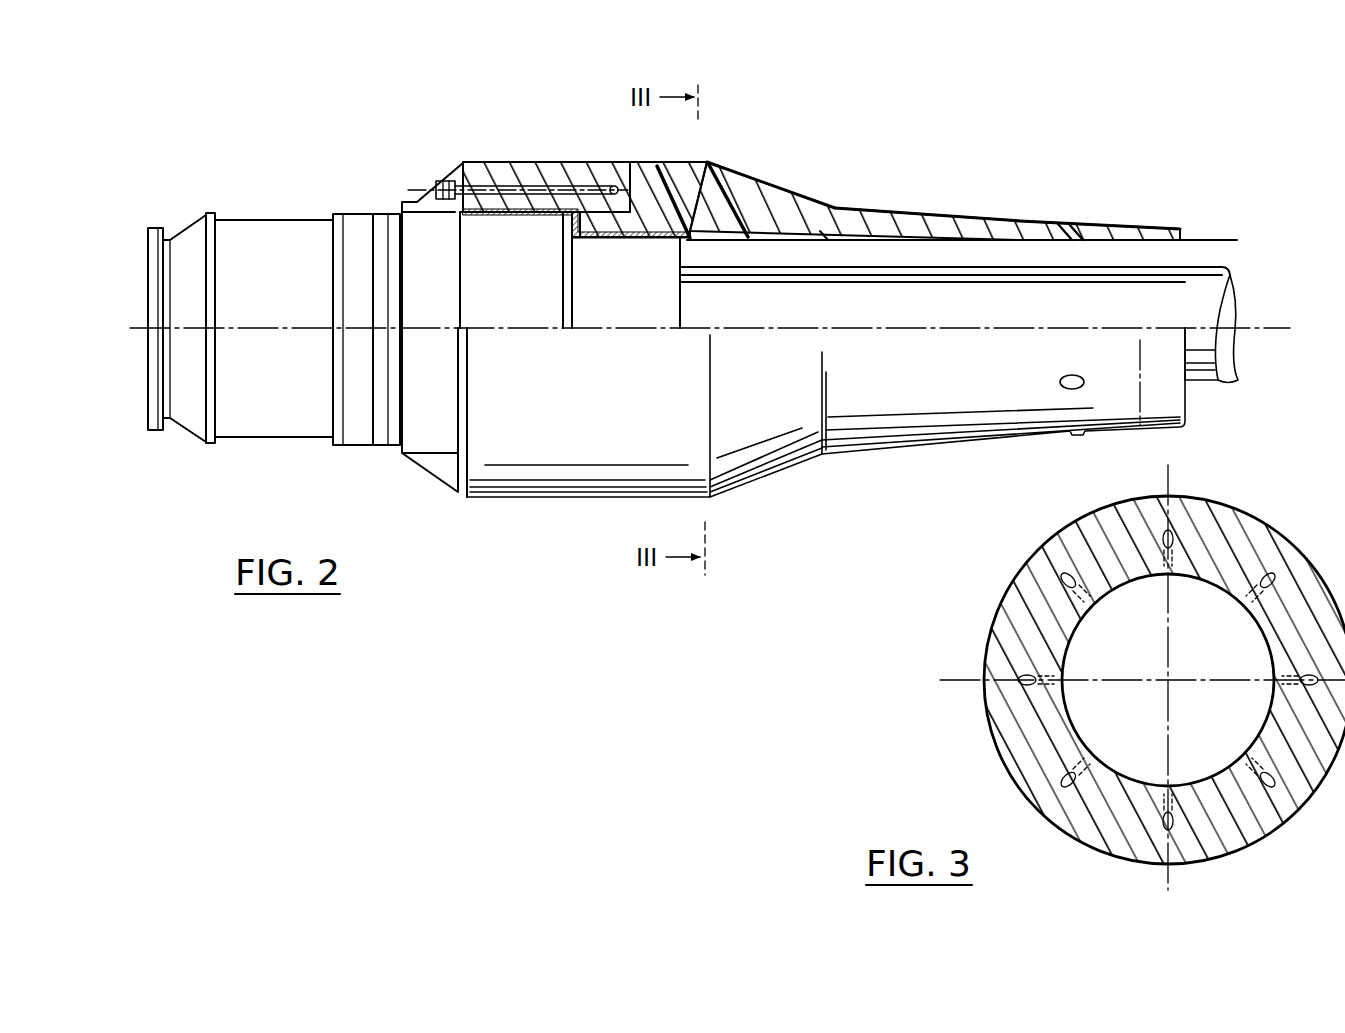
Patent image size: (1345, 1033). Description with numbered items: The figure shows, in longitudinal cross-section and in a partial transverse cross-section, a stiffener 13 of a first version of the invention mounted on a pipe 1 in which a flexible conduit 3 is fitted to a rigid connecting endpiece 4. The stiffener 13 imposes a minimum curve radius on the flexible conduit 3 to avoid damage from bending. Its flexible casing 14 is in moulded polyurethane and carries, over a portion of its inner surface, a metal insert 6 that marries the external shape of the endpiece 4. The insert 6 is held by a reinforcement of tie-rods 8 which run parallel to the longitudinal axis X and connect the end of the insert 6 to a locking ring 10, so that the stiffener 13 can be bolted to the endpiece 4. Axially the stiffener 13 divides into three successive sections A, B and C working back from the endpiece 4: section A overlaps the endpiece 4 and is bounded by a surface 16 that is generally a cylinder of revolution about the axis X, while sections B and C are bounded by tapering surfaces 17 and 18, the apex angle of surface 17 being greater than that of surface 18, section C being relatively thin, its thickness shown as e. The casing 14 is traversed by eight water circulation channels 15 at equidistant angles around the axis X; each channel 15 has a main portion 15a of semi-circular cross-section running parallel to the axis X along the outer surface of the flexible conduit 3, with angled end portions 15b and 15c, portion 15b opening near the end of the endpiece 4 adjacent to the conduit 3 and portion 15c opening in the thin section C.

In FIG. 2, the pipe 1 is at (320, 250).
In FIG. 2, the flexible conduit 3 is at (862, 273).
In FIG. 2, the rigid connecting endpiece 4 is at (285, 405).
In FIG. 2, the metal insert 6 is at (507, 215).
In FIG. 2, the tie-rods 8 is at (577, 177).
In FIG. 2, the locking ring 10 is at (614, 233).
In FIG. 2, the stiffener 13 is at (935, 167).
In FIG. 3, the stiffener 13 is at (1022, 606).
In FIG. 2, the flexible casing 14 is at (512, 173).
In FIG. 3, the flexible casing 14 is at (1025, 724).
In FIG. 2, the water circulation channels 15 is at (824, 233).
In FIG. 3, the water circulation channels 15 is at (1060, 565).
In FIG. 2, the main portion 15a is at (906, 243).
In FIG. 2, the end portion 15b is at (705, 183).
In FIG. 2, the end portion 15c is at (1073, 227).
In FIG. 2, the surface 16 is at (617, 168).
In FIG. 2, the surface 17 is at (766, 195).
In FIG. 2, the surface 18 is at (963, 216).
In FIG. 2, the longitudinal axis X is at (247, 326).
In FIG. 3, the longitudinal axis X is at (1168, 679).
In FIG. 2, the gap thickness e is at (1213, 285).
In FIG. 2, the section A is at (678, 165).
In FIG. 2, the section B is at (1018, 203).
In FIG. 2, the section C is at (1185, 265).